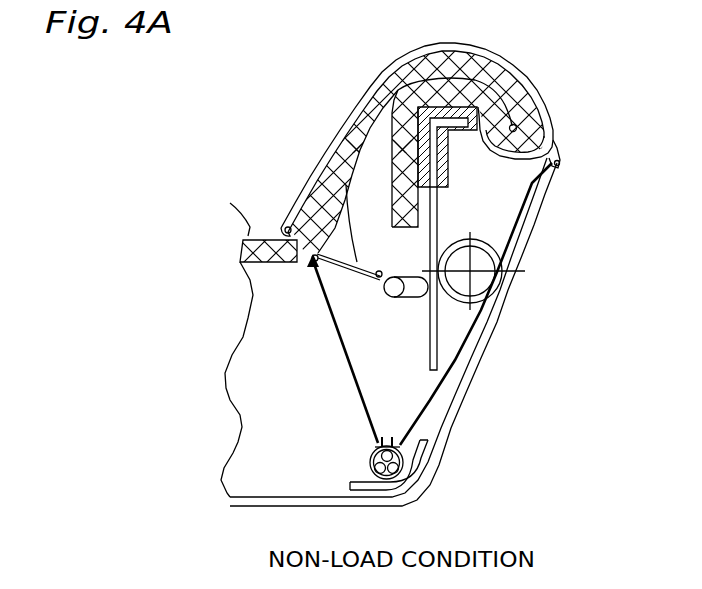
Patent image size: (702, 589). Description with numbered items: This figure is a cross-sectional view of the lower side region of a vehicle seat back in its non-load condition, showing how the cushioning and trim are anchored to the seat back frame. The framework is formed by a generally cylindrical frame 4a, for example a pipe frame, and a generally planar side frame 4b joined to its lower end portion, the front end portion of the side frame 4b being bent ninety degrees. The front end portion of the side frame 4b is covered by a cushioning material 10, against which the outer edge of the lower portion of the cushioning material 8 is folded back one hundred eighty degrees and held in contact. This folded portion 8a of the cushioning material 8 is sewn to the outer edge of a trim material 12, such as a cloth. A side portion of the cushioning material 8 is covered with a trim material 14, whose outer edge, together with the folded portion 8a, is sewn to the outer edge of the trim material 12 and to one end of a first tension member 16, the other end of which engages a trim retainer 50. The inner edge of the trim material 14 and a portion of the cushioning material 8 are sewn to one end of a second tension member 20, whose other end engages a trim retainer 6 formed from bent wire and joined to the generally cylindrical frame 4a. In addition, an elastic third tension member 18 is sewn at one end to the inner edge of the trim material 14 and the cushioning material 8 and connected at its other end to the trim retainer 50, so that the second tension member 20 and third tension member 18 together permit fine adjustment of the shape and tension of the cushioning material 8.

The trim material 14 is at (518, 80).
The folded portion 8a is at (530, 133).
The cushioning material 10 is at (450, 175).
The side frame 4b is at (438, 336).
The generally cylindrical frame 4a is at (500, 258).
The trim material 12 is at (495, 305).
The first tension member 16 is at (413, 420).
The third tension member 18 is at (344, 353).
The second tension member 20 is at (312, 192).
The trim retainer 6 is at (397, 298).
The cushioning material 8 is at (260, 219).
The trim retainer 50 is at (370, 462).